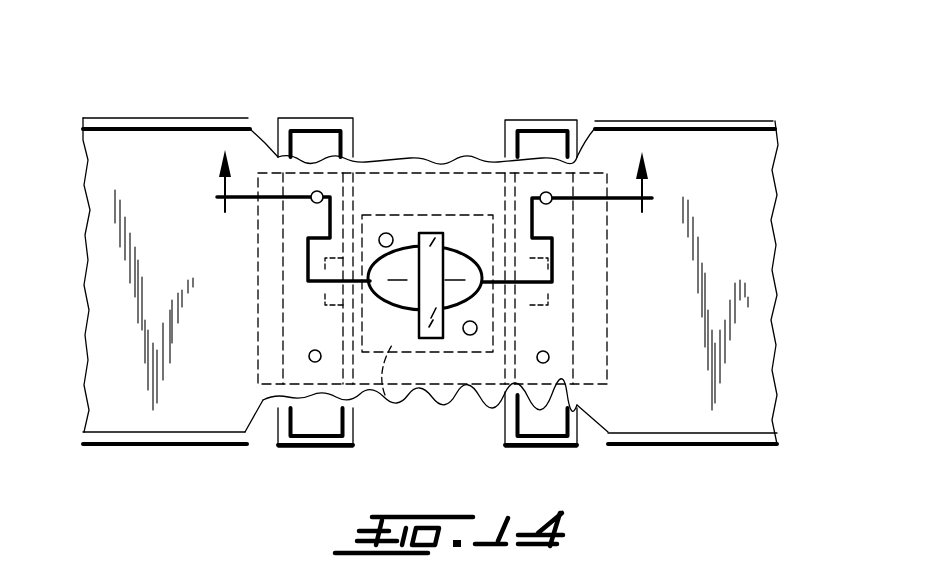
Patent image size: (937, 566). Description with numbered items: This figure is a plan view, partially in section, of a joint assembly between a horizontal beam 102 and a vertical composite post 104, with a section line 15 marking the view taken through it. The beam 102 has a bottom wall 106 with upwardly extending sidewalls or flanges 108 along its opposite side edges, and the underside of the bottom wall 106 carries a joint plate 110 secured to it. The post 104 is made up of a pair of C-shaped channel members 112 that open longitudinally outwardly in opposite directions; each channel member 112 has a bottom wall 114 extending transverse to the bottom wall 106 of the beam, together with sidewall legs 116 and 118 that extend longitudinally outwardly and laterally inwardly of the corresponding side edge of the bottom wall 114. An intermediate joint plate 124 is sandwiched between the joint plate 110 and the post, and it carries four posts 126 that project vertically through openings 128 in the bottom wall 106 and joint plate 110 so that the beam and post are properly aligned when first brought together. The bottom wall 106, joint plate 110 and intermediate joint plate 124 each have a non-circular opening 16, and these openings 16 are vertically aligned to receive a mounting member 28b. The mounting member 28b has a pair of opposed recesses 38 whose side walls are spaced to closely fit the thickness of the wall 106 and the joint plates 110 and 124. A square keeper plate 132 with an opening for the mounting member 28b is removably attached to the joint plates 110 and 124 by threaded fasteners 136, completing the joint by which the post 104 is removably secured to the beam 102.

The horizontal beam 102 is at (147, 100).
The vertical composite post 104 is at (475, 88).
The bottom wall 106 is at (121, 143).
The sidewalls or flanges 108 is at (85, 146).
The joint plate 110 is at (588, 291).
The C-shaped channel members 112 is at (314, 100).
The bottom walls 114 is at (358, 132).
The legs 116 is at (302, 118).
The legs 118 is at (280, 135).
The intermediate joint plate 124 is at (548, 328).
The posts or pins 126 is at (312, 200).
The openings 128 is at (316, 205).
The keeper plate 132 is at (385, 395).
The threaded fasteners 136 is at (385, 232).
The non-circular opening 16 is at (408, 255).
The opposed recesses 38 is at (430, 233).
The mounting member 28b is at (433, 338).
The section line 15- 15 is at (725, 150).